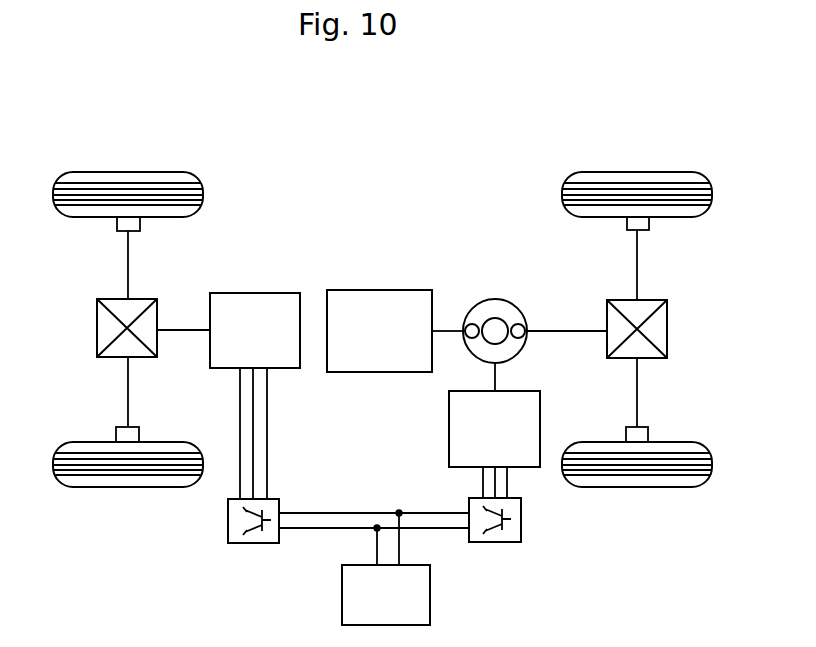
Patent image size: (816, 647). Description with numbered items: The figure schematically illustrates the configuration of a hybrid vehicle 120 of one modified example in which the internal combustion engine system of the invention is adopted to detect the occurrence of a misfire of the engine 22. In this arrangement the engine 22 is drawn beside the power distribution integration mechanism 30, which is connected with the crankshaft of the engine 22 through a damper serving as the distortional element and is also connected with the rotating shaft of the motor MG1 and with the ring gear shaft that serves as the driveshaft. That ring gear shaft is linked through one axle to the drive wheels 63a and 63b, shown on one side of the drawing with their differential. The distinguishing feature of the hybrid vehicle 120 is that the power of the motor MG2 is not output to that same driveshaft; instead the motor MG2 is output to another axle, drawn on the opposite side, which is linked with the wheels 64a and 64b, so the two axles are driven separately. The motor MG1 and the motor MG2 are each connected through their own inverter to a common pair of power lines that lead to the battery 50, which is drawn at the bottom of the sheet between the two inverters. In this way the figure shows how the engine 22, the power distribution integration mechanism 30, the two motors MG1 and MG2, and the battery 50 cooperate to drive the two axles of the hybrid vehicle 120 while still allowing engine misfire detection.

The hybrid vehicle 120 is at (407, 150).
The wheel 64a is at (128, 172).
The wheel 64b is at (128, 487).
The drive wheel 63a is at (638, 172).
The drive wheel 63b is at (637, 487).
The motor MG2 is at (252, 293).
The motor MG1 is at (449, 428).
The engine 22 is at (380, 290).
The power distribution integration mechanism 30 is at (497, 299).
The battery 50 is at (430, 594).